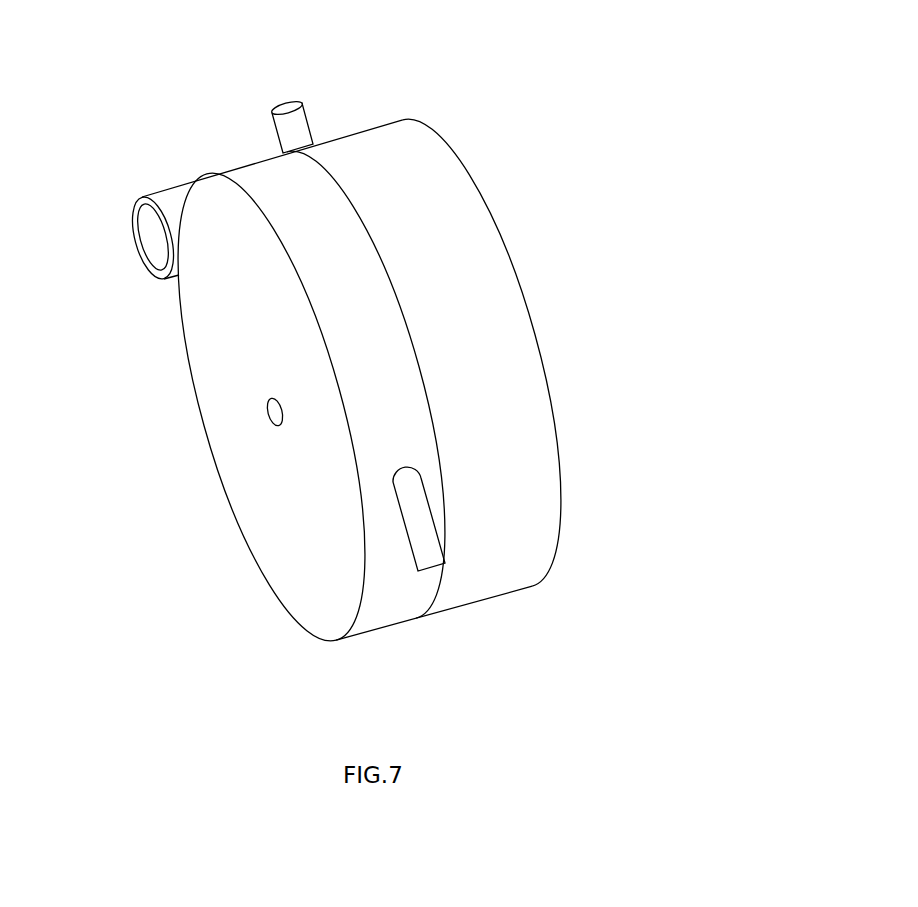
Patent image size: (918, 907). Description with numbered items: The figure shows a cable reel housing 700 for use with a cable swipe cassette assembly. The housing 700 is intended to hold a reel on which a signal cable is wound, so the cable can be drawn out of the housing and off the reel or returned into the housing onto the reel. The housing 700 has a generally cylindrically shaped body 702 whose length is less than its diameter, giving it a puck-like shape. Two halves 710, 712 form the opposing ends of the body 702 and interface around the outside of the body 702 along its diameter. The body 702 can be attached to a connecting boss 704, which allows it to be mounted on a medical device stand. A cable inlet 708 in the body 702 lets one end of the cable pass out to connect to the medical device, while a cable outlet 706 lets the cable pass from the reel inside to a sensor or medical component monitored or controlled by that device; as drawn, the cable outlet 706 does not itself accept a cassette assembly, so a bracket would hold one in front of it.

The cable reel housing 700 is at (726, 42).
The cylindrically shaped body 702 is at (308, 581).
The connecting boss 704 is at (135, 210).
The cable outlet 706 is at (435, 555).
The cable inlet 708 is at (309, 124).
The housing half 710 is at (202, 413).
The housing half 712 is at (512, 257).